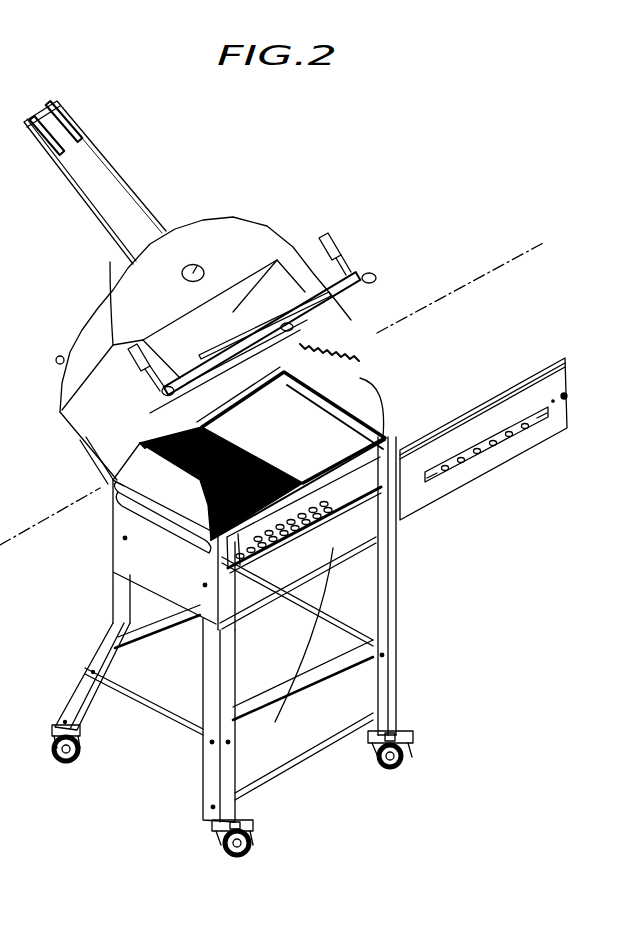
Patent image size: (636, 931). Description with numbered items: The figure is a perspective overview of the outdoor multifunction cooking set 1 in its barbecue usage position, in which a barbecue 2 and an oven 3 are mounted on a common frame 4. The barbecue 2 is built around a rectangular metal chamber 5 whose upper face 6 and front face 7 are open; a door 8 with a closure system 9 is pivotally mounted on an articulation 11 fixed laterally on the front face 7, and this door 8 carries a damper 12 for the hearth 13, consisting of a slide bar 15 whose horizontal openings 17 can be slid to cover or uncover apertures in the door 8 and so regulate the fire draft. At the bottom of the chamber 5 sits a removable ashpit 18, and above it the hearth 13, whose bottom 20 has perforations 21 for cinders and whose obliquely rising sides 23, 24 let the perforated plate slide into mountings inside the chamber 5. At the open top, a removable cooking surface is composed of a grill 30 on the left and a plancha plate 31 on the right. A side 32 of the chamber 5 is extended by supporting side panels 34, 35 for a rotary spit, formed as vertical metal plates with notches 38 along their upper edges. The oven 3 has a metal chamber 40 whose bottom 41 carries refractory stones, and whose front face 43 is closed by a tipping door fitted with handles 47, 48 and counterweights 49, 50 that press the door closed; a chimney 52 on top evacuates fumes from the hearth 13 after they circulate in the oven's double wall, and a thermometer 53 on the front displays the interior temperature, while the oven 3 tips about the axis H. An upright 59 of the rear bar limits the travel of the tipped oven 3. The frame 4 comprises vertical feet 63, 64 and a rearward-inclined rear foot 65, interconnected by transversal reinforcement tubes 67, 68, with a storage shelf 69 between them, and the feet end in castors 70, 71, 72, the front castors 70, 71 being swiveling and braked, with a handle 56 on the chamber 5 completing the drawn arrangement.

The multifunction assembly 1 is at (319, 131).
The barbecue 2 is at (436, 338).
The oven 3 is at (283, 208).
The frame 4 is at (426, 595).
The chamber 5 is at (150, 552).
The upper face 6 is at (294, 413).
The front face 7 is at (415, 548).
The door 8 is at (502, 412).
The closure system 9 is at (567, 397).
The articulation 11 is at (403, 483).
The damper 12 is at (526, 433).
The hearth 13 is at (403, 540).
The slide bar 15 is at (483, 453).
The horizontal openings 17 is at (490, 440).
The ashpit 18 is at (235, 760).
The bottom 20 is at (387, 440).
The perforations 21 is at (357, 392).
The side 23 is at (238, 560).
The side 24 is at (405, 540).
The grill 30 is at (237, 473).
The plancha plate 31 is at (333, 493).
The side 32 is at (112, 532).
The supporting side panel 34 is at (140, 482).
The supporting side panel 35 is at (380, 390).
The notches 38 is at (302, 482).
The metal chamber 40 is at (90, 337).
The bottom 41 is at (257, 373).
The front face 43 is at (233, 237).
The handle 47 is at (128, 335).
The handle 48 is at (366, 270).
The counterweight 49 is at (127, 358).
The counterweight 50 is at (335, 240).
The chimney 52 is at (97, 157).
The thermometer 53 is at (182, 275).
The handle 56 is at (122, 522).
The upright 59 is at (82, 457).
The vertical foot 63 is at (243, 767).
The vertical foot 64 is at (378, 688).
The rear foot 65 is at (78, 693).
The transversal reinforcement tube 67 is at (340, 743).
The transversal reinforcement tube 68 is at (112, 690).
The lower shelf 69 is at (333, 660).
The front castor 70 is at (223, 851).
The front castor 71 is at (403, 765).
The castor 72 is at (55, 760).
The hinge axis H is at (527, 245).